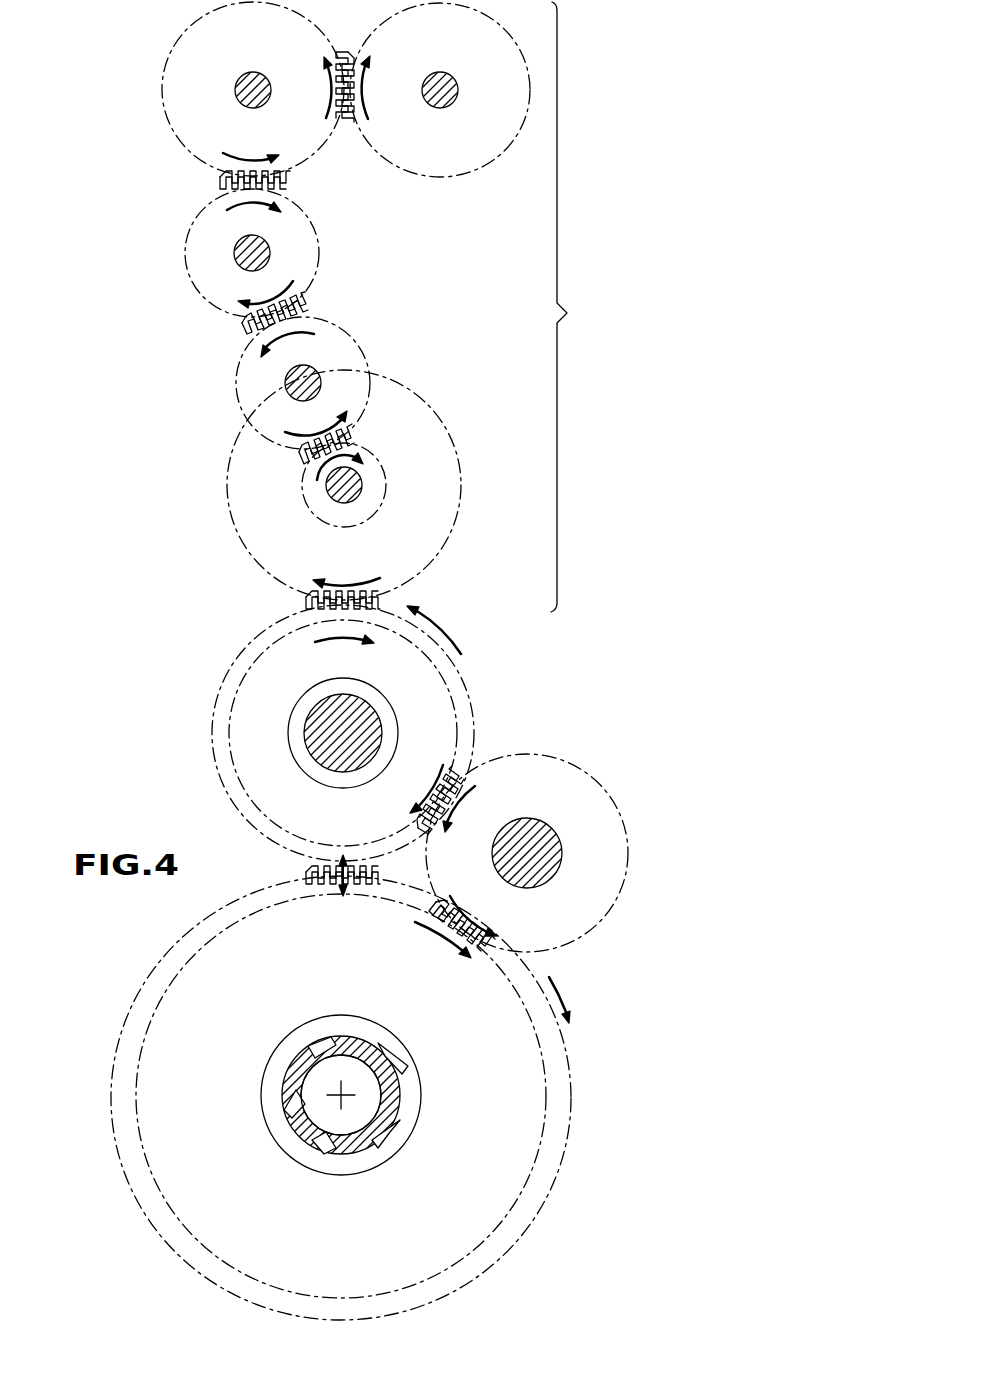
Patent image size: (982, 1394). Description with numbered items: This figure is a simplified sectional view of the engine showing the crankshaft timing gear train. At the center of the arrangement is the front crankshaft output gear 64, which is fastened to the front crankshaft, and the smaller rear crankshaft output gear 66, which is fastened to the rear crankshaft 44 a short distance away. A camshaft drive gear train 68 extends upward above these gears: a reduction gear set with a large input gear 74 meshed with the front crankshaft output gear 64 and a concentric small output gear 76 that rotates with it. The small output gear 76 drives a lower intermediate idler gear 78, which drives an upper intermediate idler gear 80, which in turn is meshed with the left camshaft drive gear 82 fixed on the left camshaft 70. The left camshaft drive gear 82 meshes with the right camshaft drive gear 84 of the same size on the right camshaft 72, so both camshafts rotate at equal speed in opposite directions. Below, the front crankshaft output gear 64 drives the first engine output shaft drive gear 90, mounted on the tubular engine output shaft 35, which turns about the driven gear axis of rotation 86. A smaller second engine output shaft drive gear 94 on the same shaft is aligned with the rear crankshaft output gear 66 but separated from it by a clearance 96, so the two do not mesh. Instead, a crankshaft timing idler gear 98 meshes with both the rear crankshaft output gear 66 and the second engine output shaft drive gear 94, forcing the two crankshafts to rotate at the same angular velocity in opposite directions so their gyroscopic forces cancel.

The engine output shaft 35 is at (395, 1122).
The rear crankshaft 44 is at (343, 772).
The front crankshaft output gear 64 is at (474, 707).
The rear crankshaft output gear 66 is at (213, 728).
The camshaft drive gear train 68 is at (581, 307).
The left camshaft 70 is at (254, 72).
The right camshaft 72 is at (441, 72).
The large input gear 74 is at (228, 513).
The small output gear 76 is at (303, 495).
The lower intermediate idler gear 78 is at (236, 386).
The upper intermediate idler gear 80 is at (185, 265).
The left camshaft drive gear 82 is at (162, 117).
The right camshaft drive gear 84 is at (441, 177).
The driven gear axis of rotation 86 is at (345, 1093).
The first engine output shaft drive gear 90 is at (575, 1090).
The second engine output shaft drive gear 94 is at (548, 1160).
The clearance 96 is at (343, 893).
The crankshaft timing idler gear 98 is at (628, 852).